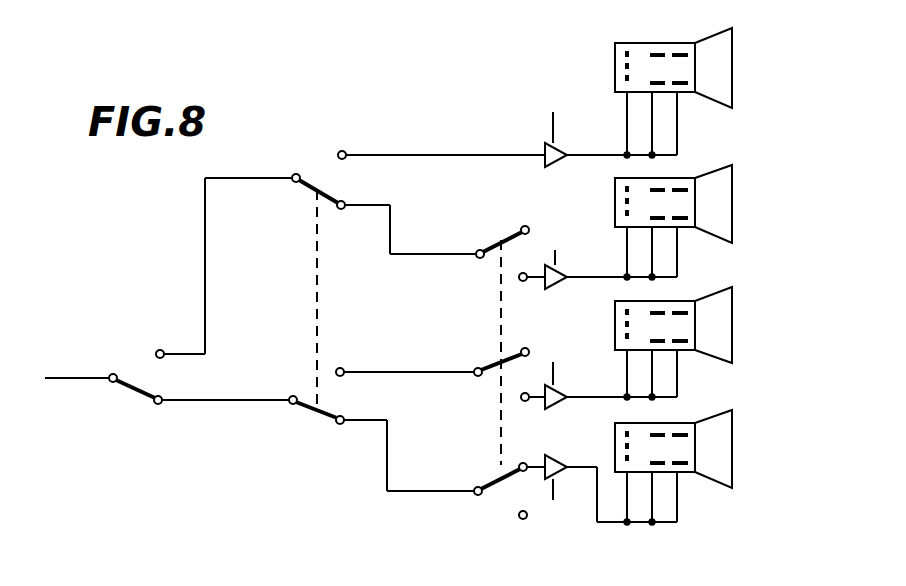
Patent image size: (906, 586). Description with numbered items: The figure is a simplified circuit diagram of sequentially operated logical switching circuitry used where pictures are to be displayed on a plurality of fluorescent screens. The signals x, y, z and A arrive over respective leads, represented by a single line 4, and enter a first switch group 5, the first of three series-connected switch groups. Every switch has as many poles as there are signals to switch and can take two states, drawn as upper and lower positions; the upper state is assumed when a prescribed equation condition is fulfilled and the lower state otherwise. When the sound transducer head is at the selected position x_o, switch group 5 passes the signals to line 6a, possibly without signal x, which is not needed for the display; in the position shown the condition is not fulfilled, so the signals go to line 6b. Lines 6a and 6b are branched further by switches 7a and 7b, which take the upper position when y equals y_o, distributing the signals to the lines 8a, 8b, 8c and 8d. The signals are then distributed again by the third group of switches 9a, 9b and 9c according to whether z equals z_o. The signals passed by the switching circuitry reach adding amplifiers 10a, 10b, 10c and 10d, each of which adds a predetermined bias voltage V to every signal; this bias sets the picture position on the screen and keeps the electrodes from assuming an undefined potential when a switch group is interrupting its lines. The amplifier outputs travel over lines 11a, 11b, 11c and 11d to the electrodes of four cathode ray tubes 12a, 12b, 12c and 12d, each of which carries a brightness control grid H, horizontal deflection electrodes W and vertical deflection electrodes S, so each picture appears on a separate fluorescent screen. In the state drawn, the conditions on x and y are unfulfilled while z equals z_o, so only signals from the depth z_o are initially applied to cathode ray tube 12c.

The single line 4 is at (92, 379).
The first switch group 5 is at (136, 390).
The line 6a is at (205, 276).
The line 6b is at (250, 401).
The switch 7a is at (310, 190).
The switch 7b is at (318, 420).
The line 8a is at (440, 158).
The line 8b is at (450, 257).
The line 8c is at (420, 374).
The line 8d is at (436, 494).
The switch 9a is at (504, 246).
The switch 9b is at (498, 364).
The switch 9c is at (490, 480).
The adding amplifier 10a is at (532, 130).
The adding amplifier 10b is at (560, 259).
The adding amplifier 10c is at (562, 374).
The adding amplifier 10d is at (563, 470).
The line 11a is at (622, 141).
The line 11b is at (622, 271).
The line 11c is at (622, 392).
The line 11d is at (606, 526).
The cathode ray tube 12a is at (732, 85).
The cathode ray tube 12b is at (732, 205).
The cathode ray tube 12c is at (732, 333).
The cathode ray tube 12d is at (732, 455).